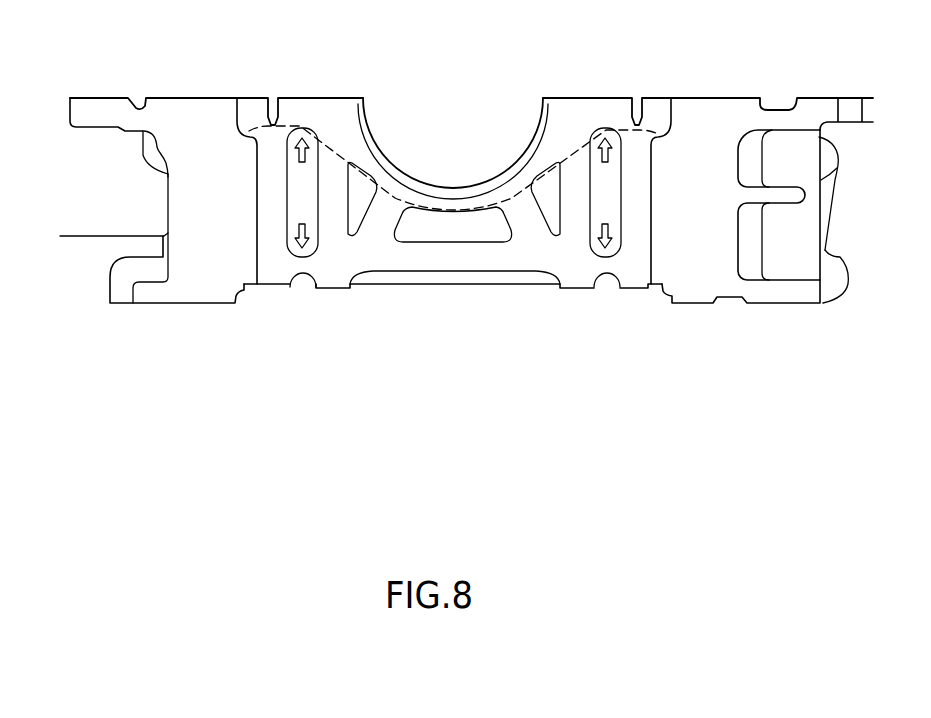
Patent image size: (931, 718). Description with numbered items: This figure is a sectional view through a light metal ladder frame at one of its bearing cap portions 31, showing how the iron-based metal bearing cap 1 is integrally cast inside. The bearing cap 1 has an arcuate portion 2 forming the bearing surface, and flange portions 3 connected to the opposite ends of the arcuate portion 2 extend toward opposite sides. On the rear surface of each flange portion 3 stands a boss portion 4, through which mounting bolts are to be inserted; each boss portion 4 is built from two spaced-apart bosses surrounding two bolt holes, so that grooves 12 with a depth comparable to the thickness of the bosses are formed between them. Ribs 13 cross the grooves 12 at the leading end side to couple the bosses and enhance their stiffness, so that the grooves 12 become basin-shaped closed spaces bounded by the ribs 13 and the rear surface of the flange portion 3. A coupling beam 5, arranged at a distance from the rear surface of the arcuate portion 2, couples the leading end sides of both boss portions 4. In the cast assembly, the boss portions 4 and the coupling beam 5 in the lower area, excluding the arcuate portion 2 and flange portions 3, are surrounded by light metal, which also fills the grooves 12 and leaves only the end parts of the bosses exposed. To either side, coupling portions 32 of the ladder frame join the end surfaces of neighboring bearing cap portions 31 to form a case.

The bearing cap 1 is at (551, 79).
The arcuate portion 2 is at (413, 192).
The flange portions 3 is at (301, 105).
The bearing cap portion 31 is at (649, 79).
The coupling portions 32 is at (183, 230).
The boss portions 4 is at (338, 298).
The coupling beam 5 is at (453, 263).
The grooves 12 is at (293, 197).
The ribs 13 is at (302, 262).